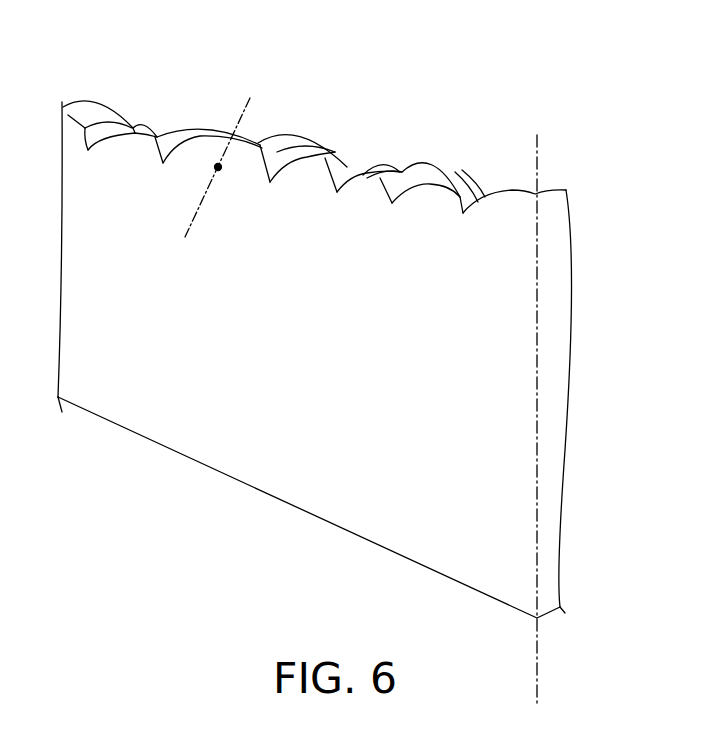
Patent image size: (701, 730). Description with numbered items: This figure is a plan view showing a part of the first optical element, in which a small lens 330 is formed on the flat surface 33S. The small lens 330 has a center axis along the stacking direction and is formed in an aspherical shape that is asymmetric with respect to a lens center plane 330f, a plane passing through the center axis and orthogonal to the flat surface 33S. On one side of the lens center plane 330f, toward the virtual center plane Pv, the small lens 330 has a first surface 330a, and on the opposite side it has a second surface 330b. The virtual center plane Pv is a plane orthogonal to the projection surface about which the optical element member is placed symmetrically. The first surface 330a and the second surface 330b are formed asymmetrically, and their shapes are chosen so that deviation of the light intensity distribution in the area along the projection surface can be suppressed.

The small lens 330 is at (314, 139).
The first surface 330a is at (267, 153).
The second surface 330b is at (195, 135).
The lens center plane 330f is at (190, 225).
The flat surface 33S is at (278, 505).
The virtual center plane Pv is at (538, 665).